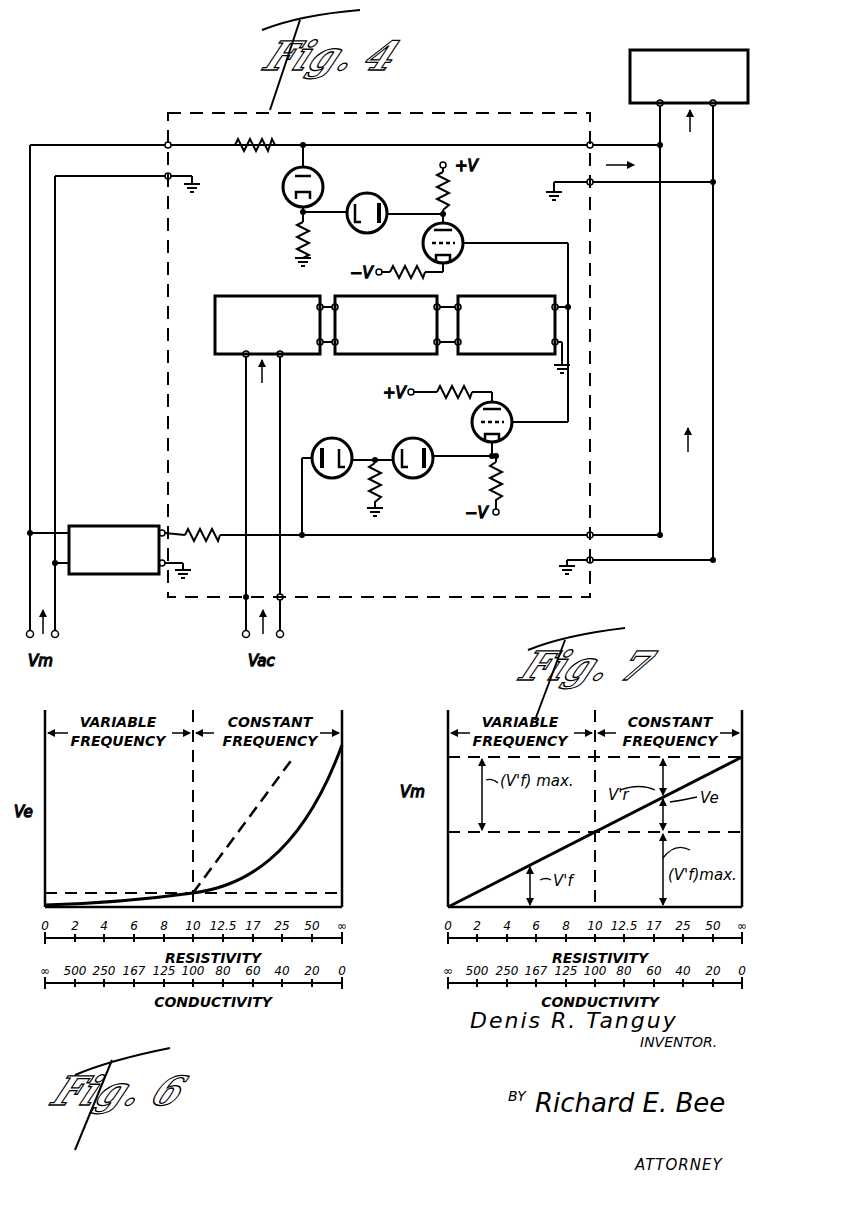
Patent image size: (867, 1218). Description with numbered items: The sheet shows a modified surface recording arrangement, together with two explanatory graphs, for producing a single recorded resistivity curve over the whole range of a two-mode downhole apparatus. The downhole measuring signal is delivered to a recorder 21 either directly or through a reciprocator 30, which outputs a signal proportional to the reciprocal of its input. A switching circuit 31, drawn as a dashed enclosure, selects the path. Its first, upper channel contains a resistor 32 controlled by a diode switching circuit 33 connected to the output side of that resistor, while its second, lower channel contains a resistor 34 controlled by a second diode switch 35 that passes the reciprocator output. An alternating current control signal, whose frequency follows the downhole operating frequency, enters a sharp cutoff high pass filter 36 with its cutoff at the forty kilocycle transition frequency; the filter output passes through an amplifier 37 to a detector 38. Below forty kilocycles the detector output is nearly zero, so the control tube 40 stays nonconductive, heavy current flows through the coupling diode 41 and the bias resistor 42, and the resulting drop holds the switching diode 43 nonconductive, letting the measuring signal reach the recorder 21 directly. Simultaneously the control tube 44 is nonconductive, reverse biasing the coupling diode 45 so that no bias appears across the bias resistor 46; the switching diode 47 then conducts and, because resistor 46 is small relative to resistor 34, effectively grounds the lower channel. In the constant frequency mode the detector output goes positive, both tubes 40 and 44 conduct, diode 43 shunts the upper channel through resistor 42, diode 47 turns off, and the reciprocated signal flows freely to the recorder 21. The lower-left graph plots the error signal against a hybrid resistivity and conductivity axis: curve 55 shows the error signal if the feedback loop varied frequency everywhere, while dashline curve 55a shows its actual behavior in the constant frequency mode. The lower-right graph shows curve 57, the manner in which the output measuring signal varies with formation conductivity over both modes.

In FIG. 4, the recorder 21 is at (683, 50).
In FIG. 4, the reciprocator 30 is at (103, 526).
In FIG. 4, the switching circuit 31 is at (467, 113).
In FIG. 4, the resistor 32 is at (246, 152).
In FIG. 4, the diode switching circuit 33 is at (355, 178).
In FIG. 4, the resistor 34 is at (201, 530).
In FIG. 4, the second diode switch 35 is at (345, 507).
In FIG. 4, the high pass filter 36 is at (265, 296).
In FIG. 4, the amplifier 37 is at (357, 357).
In FIG. 4, the detector 38 is at (520, 296).
In FIG. 4, the control tube 40 is at (461, 230).
In FIG. 4, the coupling diode 41 is at (383, 200).
In FIG. 4, the bias resistor 42 is at (300, 233).
In FIG. 4, the switching diode 43 is at (283, 191).
In FIG. 4, the control tube 44 is at (506, 437).
In FIG. 4, the coupling diode 45 is at (410, 438).
In FIG. 4, the bias resistor 46 is at (381, 492).
In FIG. 4, the switching diode 47 is at (333, 438).
In FIG. 6, the curve 55 is at (292, 850).
In FIG. 6, the dashline curve 55a is at (254, 810).
In FIG. 7, the curve 57 is at (545, 852).